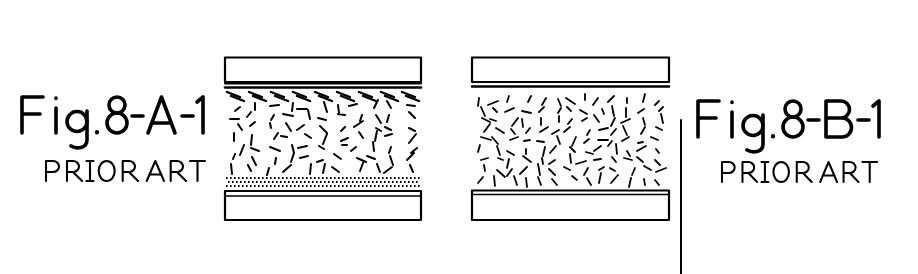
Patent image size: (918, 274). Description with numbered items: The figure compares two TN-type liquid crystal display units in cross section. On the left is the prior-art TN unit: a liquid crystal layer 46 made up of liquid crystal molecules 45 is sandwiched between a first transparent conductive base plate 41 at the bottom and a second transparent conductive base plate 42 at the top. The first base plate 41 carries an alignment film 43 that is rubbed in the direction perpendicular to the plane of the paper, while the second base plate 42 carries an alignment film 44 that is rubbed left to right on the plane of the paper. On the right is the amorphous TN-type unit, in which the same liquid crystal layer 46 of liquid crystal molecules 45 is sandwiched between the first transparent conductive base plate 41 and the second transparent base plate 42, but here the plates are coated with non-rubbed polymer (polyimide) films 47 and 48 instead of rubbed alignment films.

In FIG. 8-A-1, the first transparent conductive base plate 41 is at (407, 210).
In FIG. 8-B-1, the first transparent conductive base plate 41 is at (642, 212).
In FIG. 8-A-1, the second transparent conductive base plate 42 is at (378, 72).
In FIG. 8-B-1, the second transparent conductive base plate 42 is at (647, 67).
In FIG. 8-A-1, the alignment film 43 is at (247, 193).
In FIG. 8-A-1, the alignment film 44 is at (290, 83).
In FIG. 8-A-1, the liquid crystal molecule 45 is at (412, 148).
In FIG. 8-B-1, the liquid crystal molecule 45 is at (480, 143).
In FIG. 8-A-1, the liquid crystal layer 46 is at (227, 110).
In FIG. 8-B-1, the liquid crystal layer 46 is at (668, 112).
In FIG. 8-B-1, the non-rubbed polymer film 47 is at (505, 193).
In FIG. 8-B-1, the non-rubbed polymer film 48 is at (543, 85).